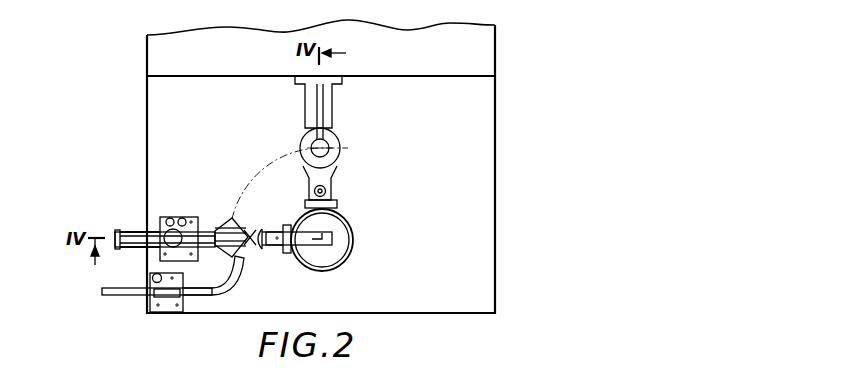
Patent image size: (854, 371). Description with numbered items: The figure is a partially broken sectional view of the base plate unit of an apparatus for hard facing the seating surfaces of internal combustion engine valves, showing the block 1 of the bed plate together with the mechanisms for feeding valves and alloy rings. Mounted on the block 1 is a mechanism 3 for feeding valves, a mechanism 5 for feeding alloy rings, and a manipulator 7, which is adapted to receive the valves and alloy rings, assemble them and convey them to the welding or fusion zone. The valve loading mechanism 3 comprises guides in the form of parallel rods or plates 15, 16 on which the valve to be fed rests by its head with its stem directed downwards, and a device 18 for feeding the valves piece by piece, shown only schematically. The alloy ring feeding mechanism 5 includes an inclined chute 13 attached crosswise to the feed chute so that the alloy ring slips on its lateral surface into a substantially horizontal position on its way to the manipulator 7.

The block 1 is at (147, 113).
The mechanism for feeding valves 3 is at (131, 230).
The mechanism for feeding alloy rings 5 is at (128, 296).
The manipulator 7 is at (346, 241).
The inclined chute 13 is at (222, 291).
The parallel rod or plate 15 is at (120, 231).
The parallel rod or plate 16 is at (134, 249).
The device for feeding the valves piece by piece 18 is at (173, 217).